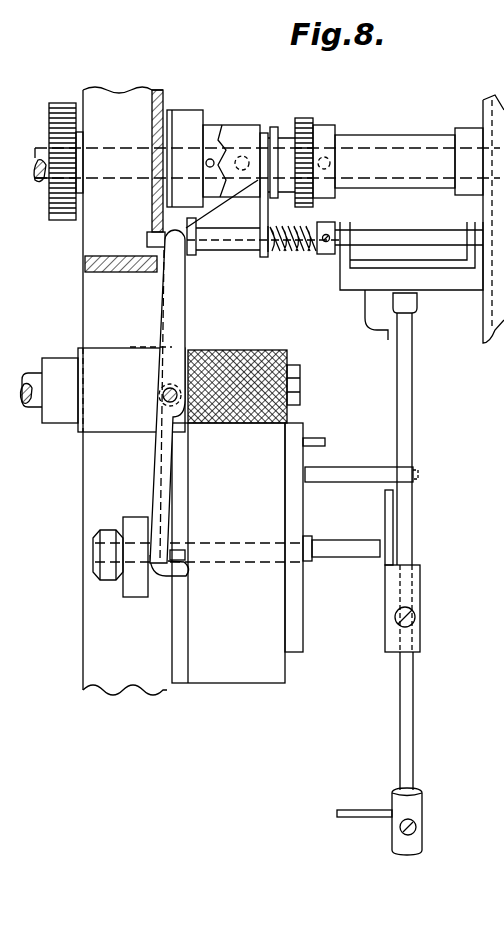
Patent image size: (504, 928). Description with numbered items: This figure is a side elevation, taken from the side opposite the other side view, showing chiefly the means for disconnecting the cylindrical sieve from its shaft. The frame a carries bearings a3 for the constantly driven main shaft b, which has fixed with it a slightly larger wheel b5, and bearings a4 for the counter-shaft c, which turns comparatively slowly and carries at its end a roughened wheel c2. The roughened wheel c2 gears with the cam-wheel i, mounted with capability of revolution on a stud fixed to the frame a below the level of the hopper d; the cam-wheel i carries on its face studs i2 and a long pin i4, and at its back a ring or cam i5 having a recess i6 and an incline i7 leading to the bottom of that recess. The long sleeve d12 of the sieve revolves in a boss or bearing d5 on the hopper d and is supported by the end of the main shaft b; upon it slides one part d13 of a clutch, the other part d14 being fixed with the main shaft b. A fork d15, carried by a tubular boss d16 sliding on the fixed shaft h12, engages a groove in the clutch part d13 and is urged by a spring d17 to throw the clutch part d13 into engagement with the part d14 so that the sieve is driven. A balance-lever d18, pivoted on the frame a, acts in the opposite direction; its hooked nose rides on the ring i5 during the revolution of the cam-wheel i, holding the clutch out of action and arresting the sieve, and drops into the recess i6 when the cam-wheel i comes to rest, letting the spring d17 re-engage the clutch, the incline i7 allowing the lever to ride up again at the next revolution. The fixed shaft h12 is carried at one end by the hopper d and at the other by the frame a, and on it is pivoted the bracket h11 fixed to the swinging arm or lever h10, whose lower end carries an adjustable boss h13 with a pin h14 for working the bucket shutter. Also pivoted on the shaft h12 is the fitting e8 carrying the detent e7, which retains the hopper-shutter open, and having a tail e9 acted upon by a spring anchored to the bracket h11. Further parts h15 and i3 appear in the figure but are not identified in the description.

The frame a is at (85, 265).
The bearings a3 is at (93, 148).
The bearings a4 is at (78, 432).
The main shaft b is at (38, 180).
The wheel b5 is at (58, 221).
The counter-shaft c is at (36, 373).
The roughened wheel c2 is at (288, 352).
The hopper d is at (98, 411).
The boss or bearing d5 is at (468, 128).
The sleeve d12 is at (386, 135).
The movable clutch part d13 is at (274, 128).
The fixed clutch part d14 is at (214, 128).
The fork d15 is at (262, 258).
The tubular boss or sleeve d16 is at (203, 256).
The spring d17 is at (302, 256).
The balance-lever d18 is at (170, 298).
The detent e7 is at (390, 336).
The fitting e8 is at (352, 292).
The tail e9 is at (368, 326).
The swinging arm or lever h10 is at (400, 680).
The bracket h11 is at (342, 292).
The fixed shaft h12 is at (386, 232).
The adjustable boss h13 is at (402, 856).
The pin h14 is at (348, 810).
The rod h15 is at (385, 520).
The cam-wheel i is at (254, 686).
The studs i2 is at (327, 442).
The carriage plate i3 is at (303, 632).
The long pin i4 is at (330, 483).
The ring or cam i5 is at (184, 686).
The recess i6 is at (186, 553).
The incline i7 is at (188, 576).